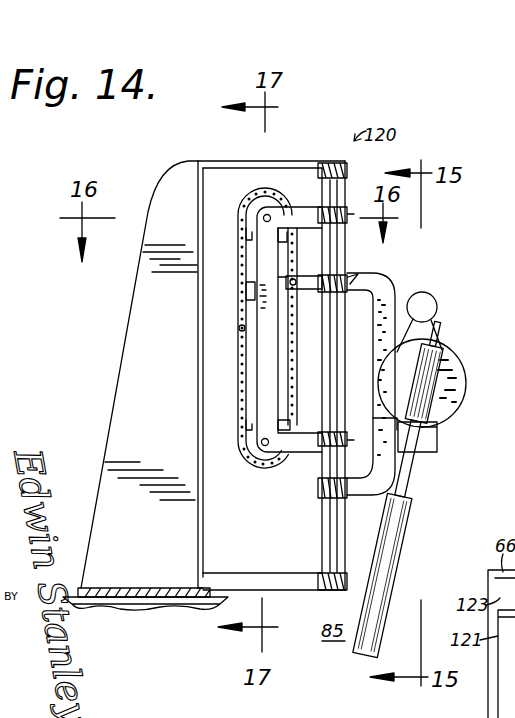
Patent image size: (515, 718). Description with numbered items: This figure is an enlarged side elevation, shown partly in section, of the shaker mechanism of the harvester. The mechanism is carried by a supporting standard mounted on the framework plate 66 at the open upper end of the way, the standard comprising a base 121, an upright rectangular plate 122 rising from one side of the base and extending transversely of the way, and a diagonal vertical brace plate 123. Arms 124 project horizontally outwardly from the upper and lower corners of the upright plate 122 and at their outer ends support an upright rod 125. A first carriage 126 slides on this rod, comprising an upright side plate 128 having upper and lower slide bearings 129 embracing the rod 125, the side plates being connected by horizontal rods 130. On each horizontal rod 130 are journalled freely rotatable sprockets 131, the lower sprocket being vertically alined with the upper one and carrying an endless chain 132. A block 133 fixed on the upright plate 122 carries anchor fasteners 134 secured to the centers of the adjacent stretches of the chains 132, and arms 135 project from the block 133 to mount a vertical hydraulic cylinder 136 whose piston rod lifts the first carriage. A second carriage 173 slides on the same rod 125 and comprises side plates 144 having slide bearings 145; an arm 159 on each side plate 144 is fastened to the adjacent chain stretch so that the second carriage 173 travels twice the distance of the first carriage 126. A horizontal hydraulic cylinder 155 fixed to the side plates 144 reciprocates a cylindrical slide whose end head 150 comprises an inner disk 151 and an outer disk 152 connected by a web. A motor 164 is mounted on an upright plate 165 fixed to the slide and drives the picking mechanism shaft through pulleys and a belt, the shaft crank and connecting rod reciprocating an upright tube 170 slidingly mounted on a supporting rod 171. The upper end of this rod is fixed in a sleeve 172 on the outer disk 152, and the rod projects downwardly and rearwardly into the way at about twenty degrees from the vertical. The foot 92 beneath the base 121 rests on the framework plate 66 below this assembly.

The framework plate 66 is at (76, 600).
The base foot 92 is at (143, 608).
The base 121 is at (125, 588).
The upright rectangular plate 122 is at (198, 212).
The diagonal vertical brace plates 123 is at (119, 400).
The arms 124 is at (249, 146).
The upright rods 125 is at (323, 558).
The first carriage 126 is at (262, 466).
The side plates 128 is at (260, 401).
The slide bearings 129 is at (322, 212).
The horizontal rods 130 is at (263, 214).
The sprockets 131 is at (258, 191).
The endless chain 132 is at (269, 466).
The block 133 is at (240, 332).
The anchor fasteners 134 is at (240, 322).
The arms 135 is at (236, 276).
The vertical hydraulic cylinder 136 is at (238, 305).
The side plates 144 is at (382, 290).
The slide bearings 145 is at (345, 282).
The end head 150 is at (446, 383).
The inner disk 151 is at (440, 428).
The outer disk 152 is at (462, 380).
The horizontal hydraulic cylinder 155 is at (440, 440).
The arm 159 is at (300, 290).
The motor 164 is at (430, 304).
The upright plate 165 is at (440, 327).
The upright tube 170 is at (394, 549).
The upright supporting rod 171 is at (419, 482).
The sleeve 172 is at (414, 382).
The bracket pivot 173 is at (398, 270).